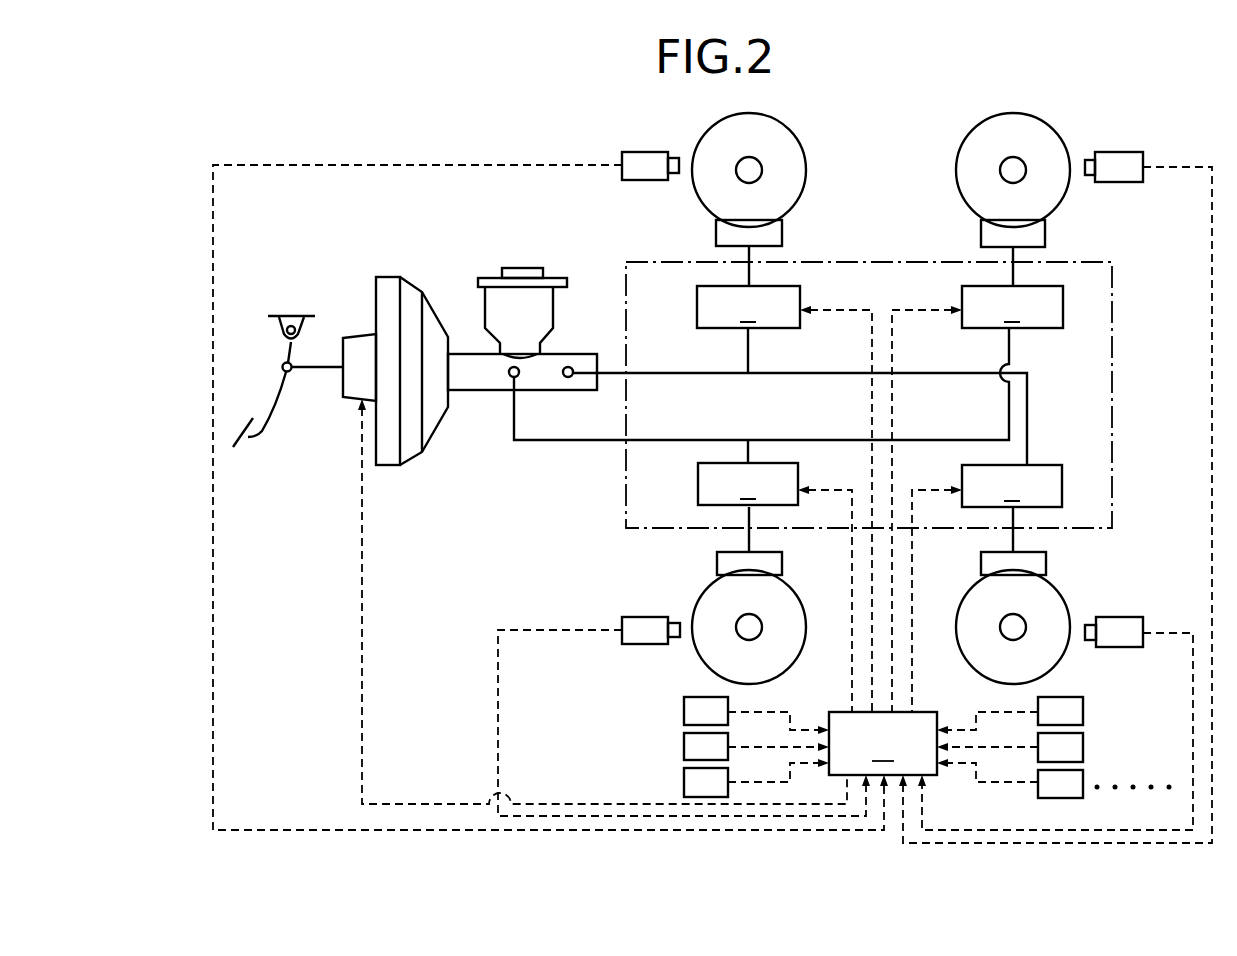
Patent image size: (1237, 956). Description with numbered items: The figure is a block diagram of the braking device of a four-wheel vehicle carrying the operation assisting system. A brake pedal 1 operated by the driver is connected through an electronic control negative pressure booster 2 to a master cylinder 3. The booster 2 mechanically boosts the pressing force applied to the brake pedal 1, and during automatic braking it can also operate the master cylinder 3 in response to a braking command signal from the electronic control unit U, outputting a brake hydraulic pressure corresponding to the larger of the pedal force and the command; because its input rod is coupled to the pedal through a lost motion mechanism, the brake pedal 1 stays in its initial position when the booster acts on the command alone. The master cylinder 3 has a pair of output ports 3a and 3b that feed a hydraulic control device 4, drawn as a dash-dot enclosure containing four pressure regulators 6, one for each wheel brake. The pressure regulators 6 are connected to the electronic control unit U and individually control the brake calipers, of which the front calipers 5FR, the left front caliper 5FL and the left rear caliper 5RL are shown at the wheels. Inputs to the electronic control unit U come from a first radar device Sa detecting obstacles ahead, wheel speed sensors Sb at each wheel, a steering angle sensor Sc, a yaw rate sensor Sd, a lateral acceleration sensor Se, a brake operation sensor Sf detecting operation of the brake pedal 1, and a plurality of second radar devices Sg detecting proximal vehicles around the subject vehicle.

The brake pedal 1 is at (250, 421).
The electronic control negative pressure booster 2 is at (410, 299).
The master cylinder 3 is at (575, 345).
The output port 3a is at (570, 378).
The output port 3b is at (509, 377).
The hydraulic control device 4 is at (1128, 352).
The brake caliper 5FR is at (770, 236).
The brake caliper 5FL is at (770, 563).
The brake caliper 5RL is at (1025, 562).
The pressure regulator 6 is at (880, 499).
The first radar device Sa is at (688, 712).
The wheel speed sensor Sb is at (642, 160).
The steering angle sensor Sc is at (688, 747).
The yaw rate sensor Sd is at (688, 783).
The lateral acceleration sensor Se is at (1068, 706).
The brake operation sensor Sf is at (1068, 750).
The second radar device Sg is at (1062, 792).
The electronic control unit U is at (883, 743).